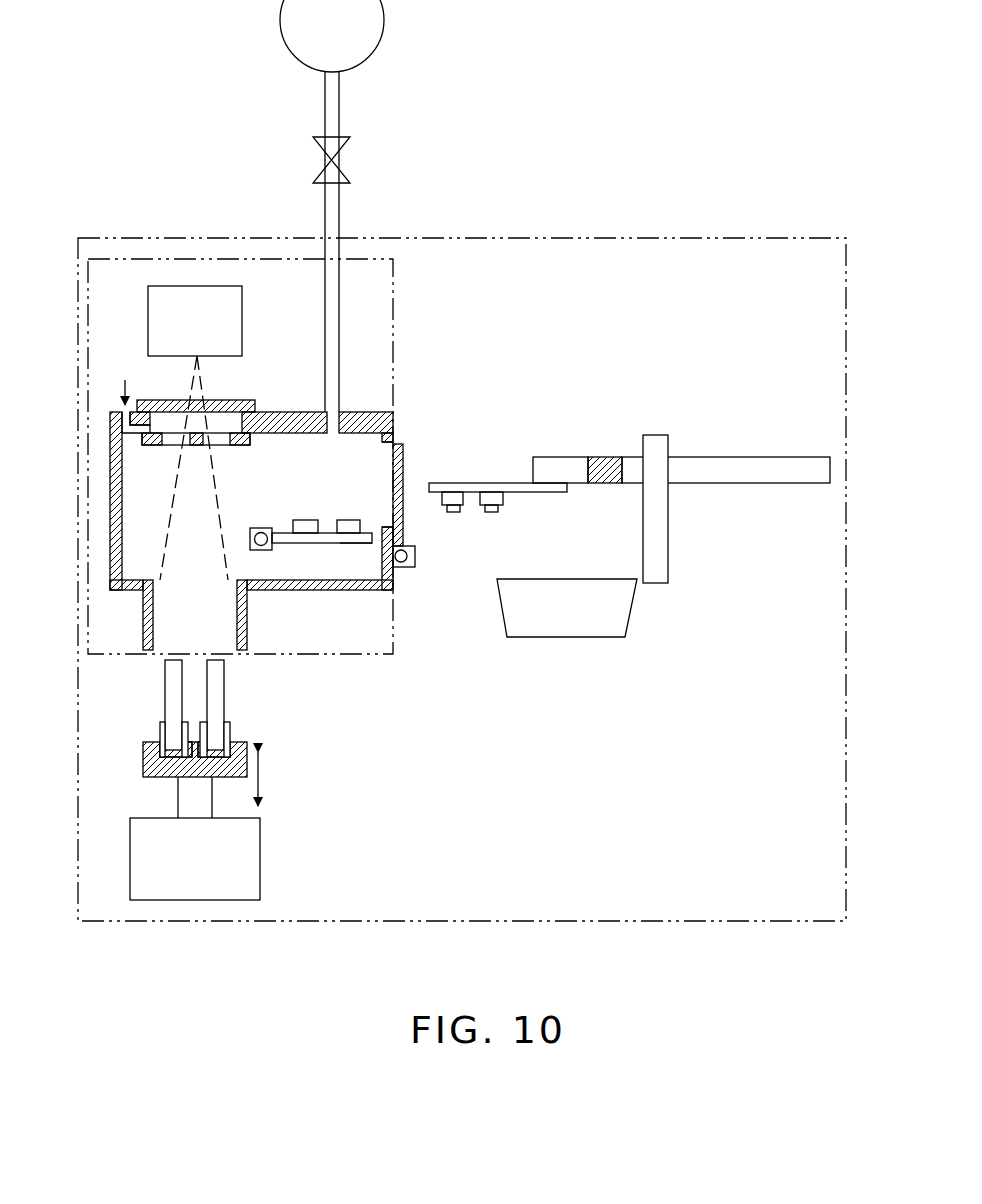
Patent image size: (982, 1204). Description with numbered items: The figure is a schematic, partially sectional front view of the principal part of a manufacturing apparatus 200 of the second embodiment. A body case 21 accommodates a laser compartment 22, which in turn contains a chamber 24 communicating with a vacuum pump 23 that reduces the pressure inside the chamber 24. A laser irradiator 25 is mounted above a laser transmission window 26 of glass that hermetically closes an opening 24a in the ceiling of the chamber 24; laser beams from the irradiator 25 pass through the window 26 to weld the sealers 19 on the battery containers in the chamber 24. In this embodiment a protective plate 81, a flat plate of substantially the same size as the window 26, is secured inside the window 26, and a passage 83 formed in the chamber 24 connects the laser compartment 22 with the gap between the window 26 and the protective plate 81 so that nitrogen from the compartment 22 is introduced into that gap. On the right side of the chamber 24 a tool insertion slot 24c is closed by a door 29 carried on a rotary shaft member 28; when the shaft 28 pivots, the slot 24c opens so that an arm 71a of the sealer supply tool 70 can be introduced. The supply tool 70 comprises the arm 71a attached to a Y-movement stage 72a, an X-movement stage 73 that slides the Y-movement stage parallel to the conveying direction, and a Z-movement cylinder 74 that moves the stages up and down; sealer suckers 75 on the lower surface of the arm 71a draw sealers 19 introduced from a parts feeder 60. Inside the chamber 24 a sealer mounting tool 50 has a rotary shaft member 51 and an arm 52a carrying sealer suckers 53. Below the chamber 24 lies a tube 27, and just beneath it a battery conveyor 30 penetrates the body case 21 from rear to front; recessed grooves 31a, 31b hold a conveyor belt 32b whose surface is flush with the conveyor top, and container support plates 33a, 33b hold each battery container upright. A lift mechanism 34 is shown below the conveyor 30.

The manufacturing apparatus 200 is at (718, 206).
The body case 21 is at (815, 237).
The laser compartment 22 is at (395, 290).
The vacuum pump 23 is at (383, 22).
The chamber 24 is at (251, 481).
The opening 24a is at (243, 442).
The tool insertion slot 24c is at (382, 448).
The laser irradiator 25 is at (242, 318).
The laser transmission window 26 is at (245, 398).
The tube 27 is at (247, 624).
The rotary shaft member 28 is at (408, 568).
The door 29 is at (407, 450).
The battery conveyor 30 is at (204, 739).
The recessed groove 31a is at (143, 768).
The recessed groove 31b is at (256, 770).
The conveyor belt 32b is at (160, 750).
The container support plate 33a is at (158, 728).
The container support plate 33b is at (187, 717).
The lift mechanism 34 is at (260, 858).
The sealer mounting tool 50 is at (310, 552).
The rotary shaft member 51 is at (260, 528).
The arm 52a is at (352, 545).
The sealer sucker 53 is at (303, 520).
The parts feeder 60 is at (595, 637).
The sealer supply tool 70 is at (623, 478).
The arm 71a is at (492, 483).
The Y-movement stage 72a is at (787, 457).
The X-movement stage 73 is at (600, 483).
The Z-movement cylinder 74 is at (668, 532).
The sealer sucker 75 is at (442, 500).
The sealer 19 is at (455, 513).
The protective plate 81 is at (148, 445).
The passage 83 is at (130, 425).